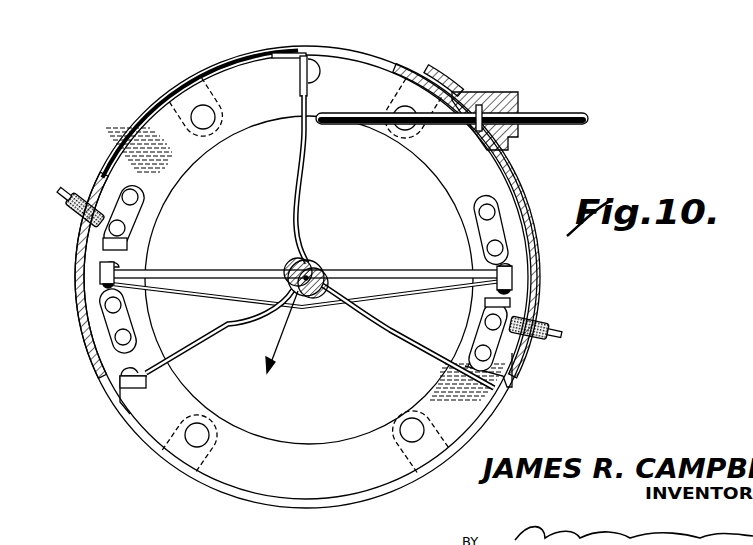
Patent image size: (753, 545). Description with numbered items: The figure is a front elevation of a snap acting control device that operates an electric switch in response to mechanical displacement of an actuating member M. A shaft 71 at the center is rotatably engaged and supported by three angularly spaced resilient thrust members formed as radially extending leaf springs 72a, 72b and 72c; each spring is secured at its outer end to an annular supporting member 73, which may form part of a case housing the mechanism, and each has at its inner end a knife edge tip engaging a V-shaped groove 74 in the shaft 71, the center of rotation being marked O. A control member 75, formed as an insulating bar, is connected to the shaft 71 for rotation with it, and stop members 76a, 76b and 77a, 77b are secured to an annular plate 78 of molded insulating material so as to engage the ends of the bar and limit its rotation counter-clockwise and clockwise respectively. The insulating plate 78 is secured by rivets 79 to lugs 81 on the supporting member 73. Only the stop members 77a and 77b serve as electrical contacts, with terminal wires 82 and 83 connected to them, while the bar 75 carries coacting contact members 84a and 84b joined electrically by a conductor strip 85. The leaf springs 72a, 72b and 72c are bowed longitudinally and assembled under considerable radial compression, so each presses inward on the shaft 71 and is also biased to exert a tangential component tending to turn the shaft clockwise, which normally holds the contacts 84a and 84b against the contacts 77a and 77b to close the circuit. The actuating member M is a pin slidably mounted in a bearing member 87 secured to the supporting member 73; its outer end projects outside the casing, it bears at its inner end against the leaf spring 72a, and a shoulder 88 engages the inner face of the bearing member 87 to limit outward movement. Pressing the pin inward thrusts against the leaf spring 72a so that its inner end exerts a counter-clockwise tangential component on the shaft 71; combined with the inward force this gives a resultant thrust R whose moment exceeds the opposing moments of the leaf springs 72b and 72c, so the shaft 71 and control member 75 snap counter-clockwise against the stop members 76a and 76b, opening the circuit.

The annular supporting member 73 is at (360, 47).
The annular plate 78 is at (243, 73).
The rivets 79 is at (200, 107).
The lugs 81 is at (172, 120).
The bearing member 87 is at (500, 92).
The shoulder 88 is at (479, 103).
The actuating member M is at (565, 112).
The control member 75 is at (400, 270).
The conductor strip 85 is at (401, 297).
The leaf spring 72a is at (312, 180).
The leaf spring 72b is at (391, 333).
The leaf spring 72c is at (224, 327).
The V-shaped groove 74 is at (318, 262).
The center O is at (322, 265).
The shaft 71 is at (326, 276).
The resultant thrust R is at (280, 340).
The stop member 77b is at (103, 245).
The contact member 84b is at (100, 268).
The stop member 76b is at (100, 290).
The terminal wire 83 is at (64, 198).
The stop member 76a is at (506, 262).
The contact member 84a is at (513, 282).
The stop member 77a is at (509, 303).
The terminal wire 82 is at (563, 336).